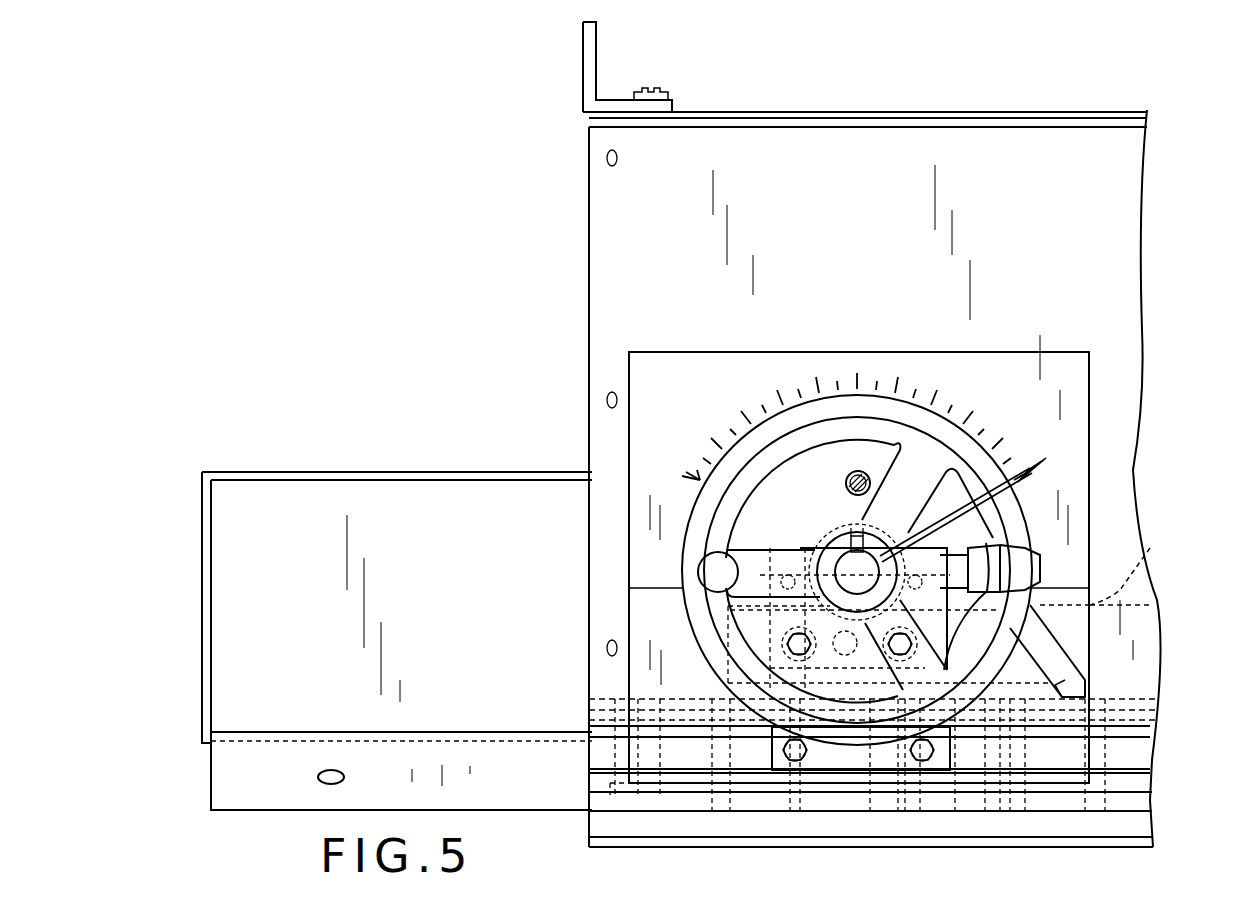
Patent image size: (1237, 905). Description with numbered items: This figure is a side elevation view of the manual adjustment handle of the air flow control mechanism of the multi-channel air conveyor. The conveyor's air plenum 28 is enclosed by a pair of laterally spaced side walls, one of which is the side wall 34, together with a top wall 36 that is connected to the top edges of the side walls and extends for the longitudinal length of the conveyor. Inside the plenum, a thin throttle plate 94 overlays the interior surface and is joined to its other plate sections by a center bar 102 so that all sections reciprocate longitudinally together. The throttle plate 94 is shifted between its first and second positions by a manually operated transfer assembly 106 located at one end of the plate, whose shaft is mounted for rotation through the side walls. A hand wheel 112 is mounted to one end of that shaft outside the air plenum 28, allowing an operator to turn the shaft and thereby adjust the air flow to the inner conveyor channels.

The air plenum 28 is at (904, 233).
The side wall 34 is at (607, 240).
The top wall 36 is at (750, 110).
The throttle plate 94 is at (760, 677).
The center bar 102 is at (1152, 548).
The transfer assembly 106 is at (963, 385).
The hand wheel 112 is at (708, 510).